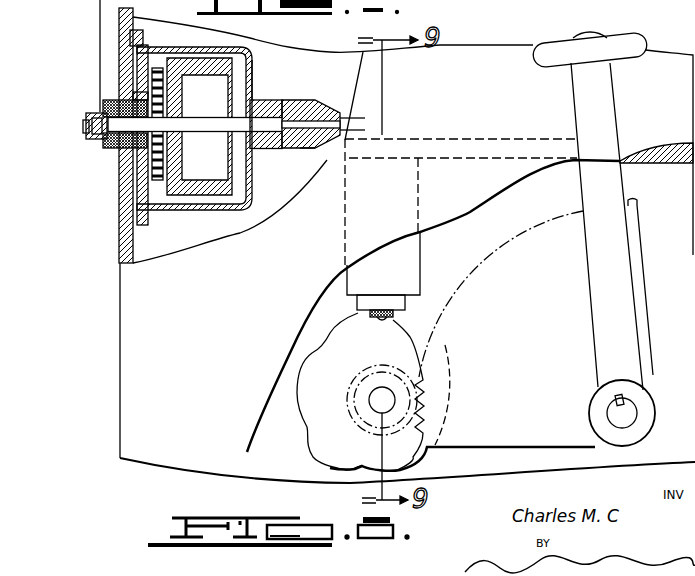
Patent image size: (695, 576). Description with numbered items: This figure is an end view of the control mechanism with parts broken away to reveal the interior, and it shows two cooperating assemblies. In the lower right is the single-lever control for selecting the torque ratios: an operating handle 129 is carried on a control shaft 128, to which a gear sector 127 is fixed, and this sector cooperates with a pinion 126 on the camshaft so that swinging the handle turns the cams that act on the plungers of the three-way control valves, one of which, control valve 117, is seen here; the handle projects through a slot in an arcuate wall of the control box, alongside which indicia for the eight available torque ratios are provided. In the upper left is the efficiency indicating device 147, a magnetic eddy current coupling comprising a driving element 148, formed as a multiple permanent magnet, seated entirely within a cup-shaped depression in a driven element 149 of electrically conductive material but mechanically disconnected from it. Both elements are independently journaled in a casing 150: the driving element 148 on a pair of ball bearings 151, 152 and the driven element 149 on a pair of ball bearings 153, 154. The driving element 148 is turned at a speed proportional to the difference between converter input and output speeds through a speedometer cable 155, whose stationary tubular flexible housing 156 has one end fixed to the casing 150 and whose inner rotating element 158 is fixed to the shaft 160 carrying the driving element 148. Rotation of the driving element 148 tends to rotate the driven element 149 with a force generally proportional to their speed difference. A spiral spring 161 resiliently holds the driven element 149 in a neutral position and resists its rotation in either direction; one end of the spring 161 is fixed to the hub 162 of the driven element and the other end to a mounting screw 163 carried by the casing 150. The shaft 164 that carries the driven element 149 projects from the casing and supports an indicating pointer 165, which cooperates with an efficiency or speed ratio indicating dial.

The three-way control valve 117 is at (407, 254).
The pinion 126 is at (350, 410).
The gear sector 127 is at (440, 297).
The control shaft 128 is at (637, 408).
The operating handle 129 is at (603, 91).
The indicating device 147 is at (258, 70).
The driving element 148 is at (218, 106).
The driven element 149 is at (230, 46).
The casing 150 is at (258, 80).
The ball bearing 151 is at (256, 99).
The ball bearing 152 is at (300, 100).
The ball bearing 153 is at (110, 108).
The ball bearing 154 is at (135, 97).
The speedometer cable 155 is at (317, 140).
The tubular flexible housing 156 is at (333, 111).
The inner rotating element 158 is at (333, 140).
The shaft 160 is at (265, 140).
The spiral spring 161 is at (152, 172).
The hub 162 is at (167, 137).
The mounting screw 163 is at (150, 66).
The shaft 164 is at (100, 138).
The indicating pointer 165 is at (100, 41).